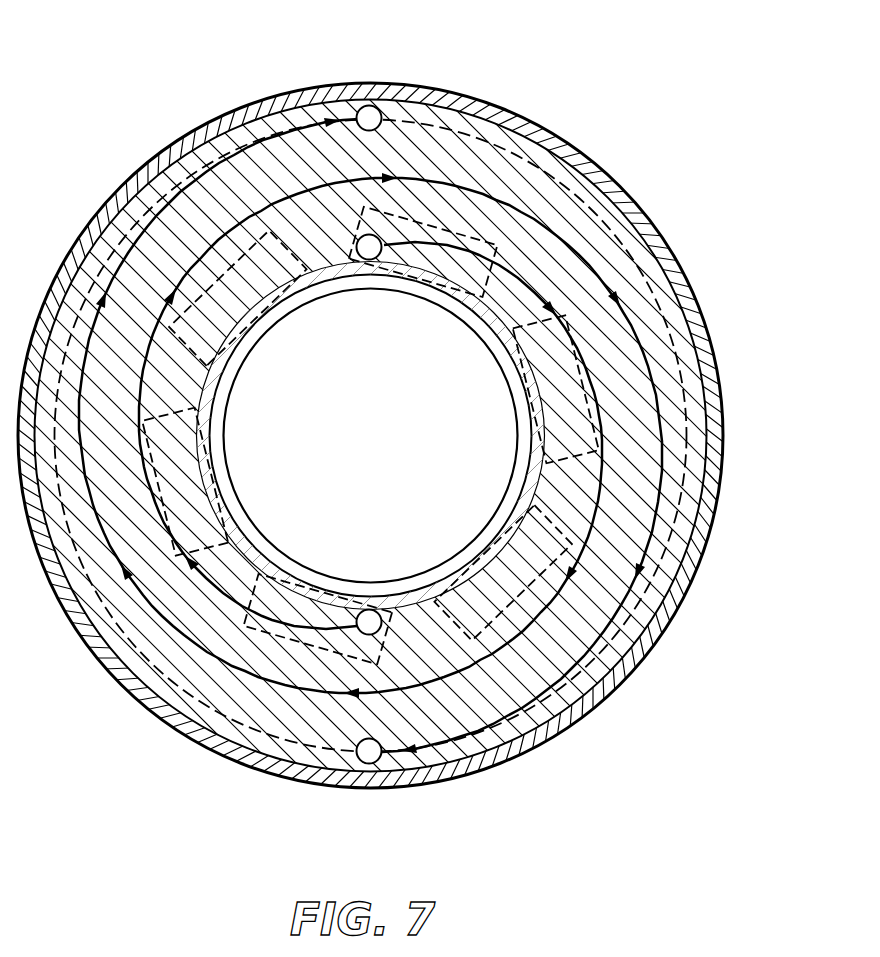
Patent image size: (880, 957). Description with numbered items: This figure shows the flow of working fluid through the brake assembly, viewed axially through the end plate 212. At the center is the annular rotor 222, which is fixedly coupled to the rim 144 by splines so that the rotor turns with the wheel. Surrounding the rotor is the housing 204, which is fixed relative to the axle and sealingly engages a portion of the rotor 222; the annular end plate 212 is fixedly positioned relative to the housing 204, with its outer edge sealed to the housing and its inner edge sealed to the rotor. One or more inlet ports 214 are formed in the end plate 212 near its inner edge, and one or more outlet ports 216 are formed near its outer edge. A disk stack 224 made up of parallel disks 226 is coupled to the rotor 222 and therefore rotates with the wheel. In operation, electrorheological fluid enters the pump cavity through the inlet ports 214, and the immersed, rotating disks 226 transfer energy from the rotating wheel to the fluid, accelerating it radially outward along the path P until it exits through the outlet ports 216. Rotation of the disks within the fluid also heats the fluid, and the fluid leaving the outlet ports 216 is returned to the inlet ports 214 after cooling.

The housing 204 is at (605, 160).
The end plate 212 is at (660, 230).
The inlet ports 214 is at (356, 243).
The outlet ports 216 is at (361, 106).
The rotor 222 is at (213, 459).
The rim 144 is at (264, 541).
The disk stack 224 is at (247, 733).
The disks 226 is at (370, 501).
The path P is at (603, 478).